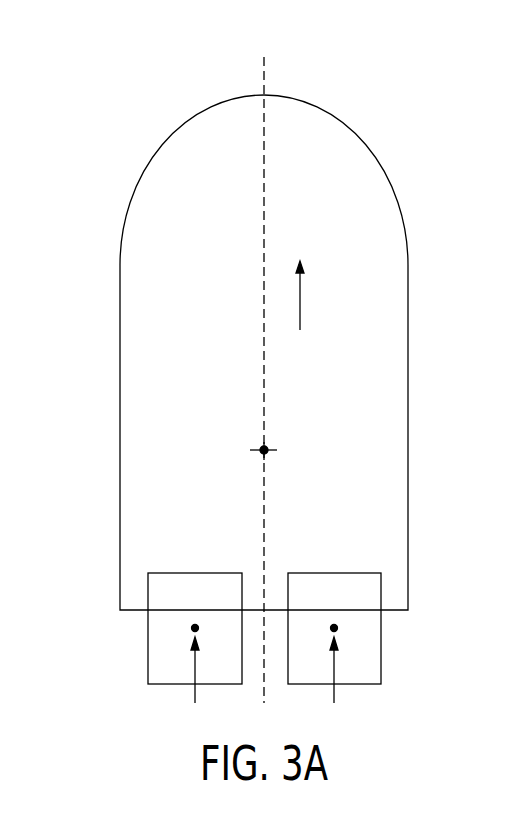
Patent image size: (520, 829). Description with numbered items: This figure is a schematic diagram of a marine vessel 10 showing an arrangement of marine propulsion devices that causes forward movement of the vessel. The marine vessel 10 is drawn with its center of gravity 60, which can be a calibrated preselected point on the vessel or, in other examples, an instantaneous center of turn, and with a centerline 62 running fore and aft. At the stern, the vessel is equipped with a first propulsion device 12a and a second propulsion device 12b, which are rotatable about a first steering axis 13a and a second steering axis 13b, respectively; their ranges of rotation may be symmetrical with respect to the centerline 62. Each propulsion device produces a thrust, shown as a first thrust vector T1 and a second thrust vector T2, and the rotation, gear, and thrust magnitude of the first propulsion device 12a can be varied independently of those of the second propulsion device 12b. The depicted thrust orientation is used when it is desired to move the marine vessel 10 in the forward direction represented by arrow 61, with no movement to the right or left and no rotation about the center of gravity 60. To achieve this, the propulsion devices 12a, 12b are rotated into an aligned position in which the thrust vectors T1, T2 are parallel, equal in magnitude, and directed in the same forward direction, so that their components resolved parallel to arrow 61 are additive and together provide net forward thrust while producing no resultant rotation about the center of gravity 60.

The marine vessel 10 is at (408, 266).
The centerline 62 is at (264, 72).
The arrow 61 is at (300, 297).
The center of gravity 60 is at (268, 446).
The first propulsion device 12a is at (147, 650).
The second propulsion device 12b is at (382, 650).
The first steering axis 13a is at (190, 627).
The second steering axis 13b is at (340, 627).
The first thrust vector T1 is at (192, 667).
The second thrust vector T2 is at (336, 667).